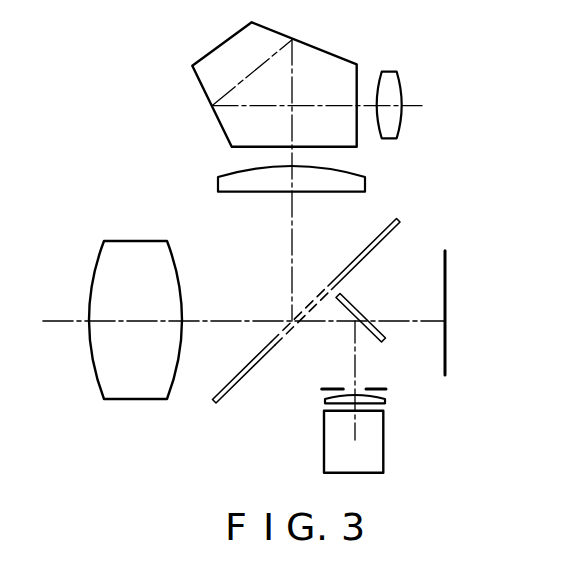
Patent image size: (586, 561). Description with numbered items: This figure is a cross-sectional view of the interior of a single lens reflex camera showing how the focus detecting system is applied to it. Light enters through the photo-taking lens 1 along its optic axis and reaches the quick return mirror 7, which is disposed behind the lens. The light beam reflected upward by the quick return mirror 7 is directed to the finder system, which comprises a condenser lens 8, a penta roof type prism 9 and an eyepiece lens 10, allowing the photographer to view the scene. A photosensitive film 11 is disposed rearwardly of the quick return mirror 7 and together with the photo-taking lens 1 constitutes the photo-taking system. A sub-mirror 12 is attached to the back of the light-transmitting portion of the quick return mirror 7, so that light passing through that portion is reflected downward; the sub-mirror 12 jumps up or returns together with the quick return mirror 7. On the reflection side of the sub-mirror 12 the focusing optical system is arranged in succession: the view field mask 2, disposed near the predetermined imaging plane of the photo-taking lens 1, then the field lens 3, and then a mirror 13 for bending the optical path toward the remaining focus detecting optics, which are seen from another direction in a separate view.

The photo-taking lens 1 is at (138, 253).
The view field mask 2 is at (328, 386).
The field lens 3 is at (385, 401).
The quick return mirror 7 is at (245, 376).
The condenser lens 8 is at (365, 186).
The penta roof type prism 9 is at (321, 59).
The eyepiece lens 10 is at (394, 78).
The photosensitive film 11 is at (447, 270).
The sub-mirror 12 is at (382, 342).
The mirror 13 is at (378, 447).